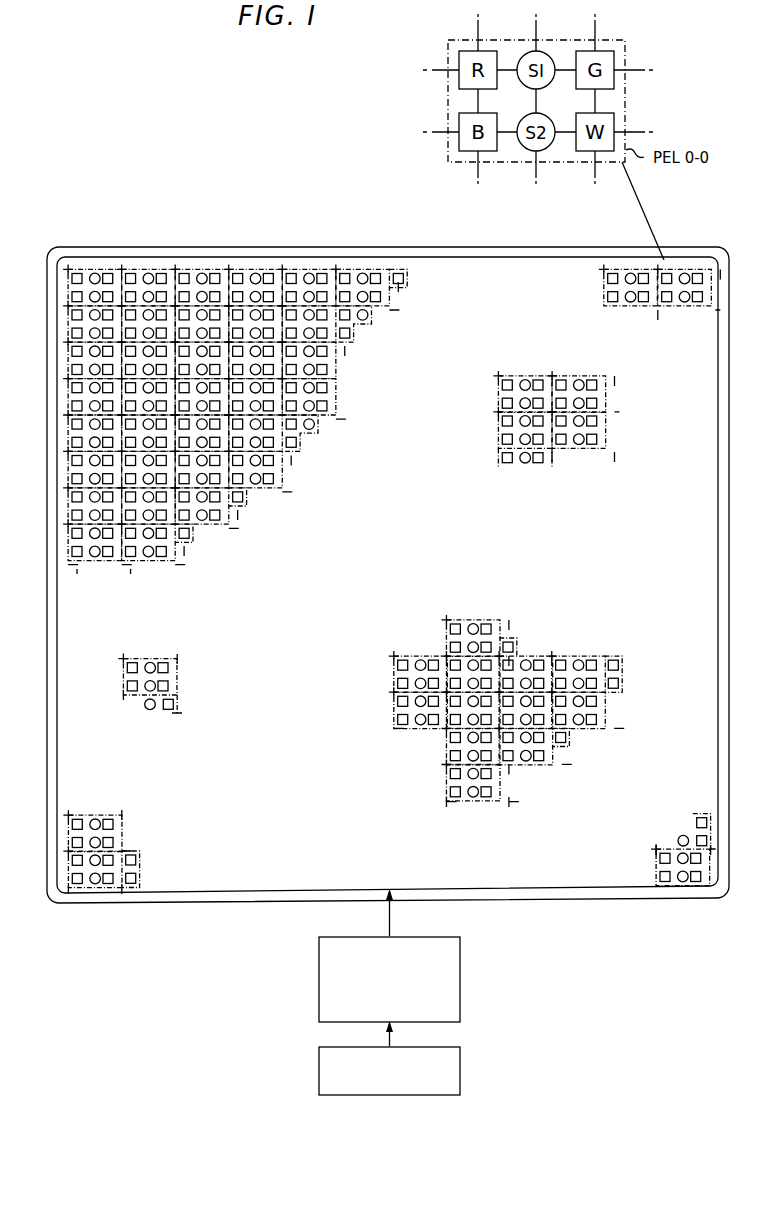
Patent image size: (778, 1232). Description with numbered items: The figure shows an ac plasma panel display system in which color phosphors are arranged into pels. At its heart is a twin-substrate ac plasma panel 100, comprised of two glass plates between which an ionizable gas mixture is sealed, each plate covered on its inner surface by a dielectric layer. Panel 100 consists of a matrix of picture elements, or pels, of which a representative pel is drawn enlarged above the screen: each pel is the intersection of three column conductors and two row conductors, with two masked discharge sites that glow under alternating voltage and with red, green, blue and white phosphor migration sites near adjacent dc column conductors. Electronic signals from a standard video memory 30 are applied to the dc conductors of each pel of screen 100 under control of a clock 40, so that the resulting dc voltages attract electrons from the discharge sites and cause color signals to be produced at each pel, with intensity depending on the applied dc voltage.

The twin-substrate ac plasma panel 100 is at (137, 247).
The video memory 30 is at (457, 980).
The clock 40 is at (455, 1073).